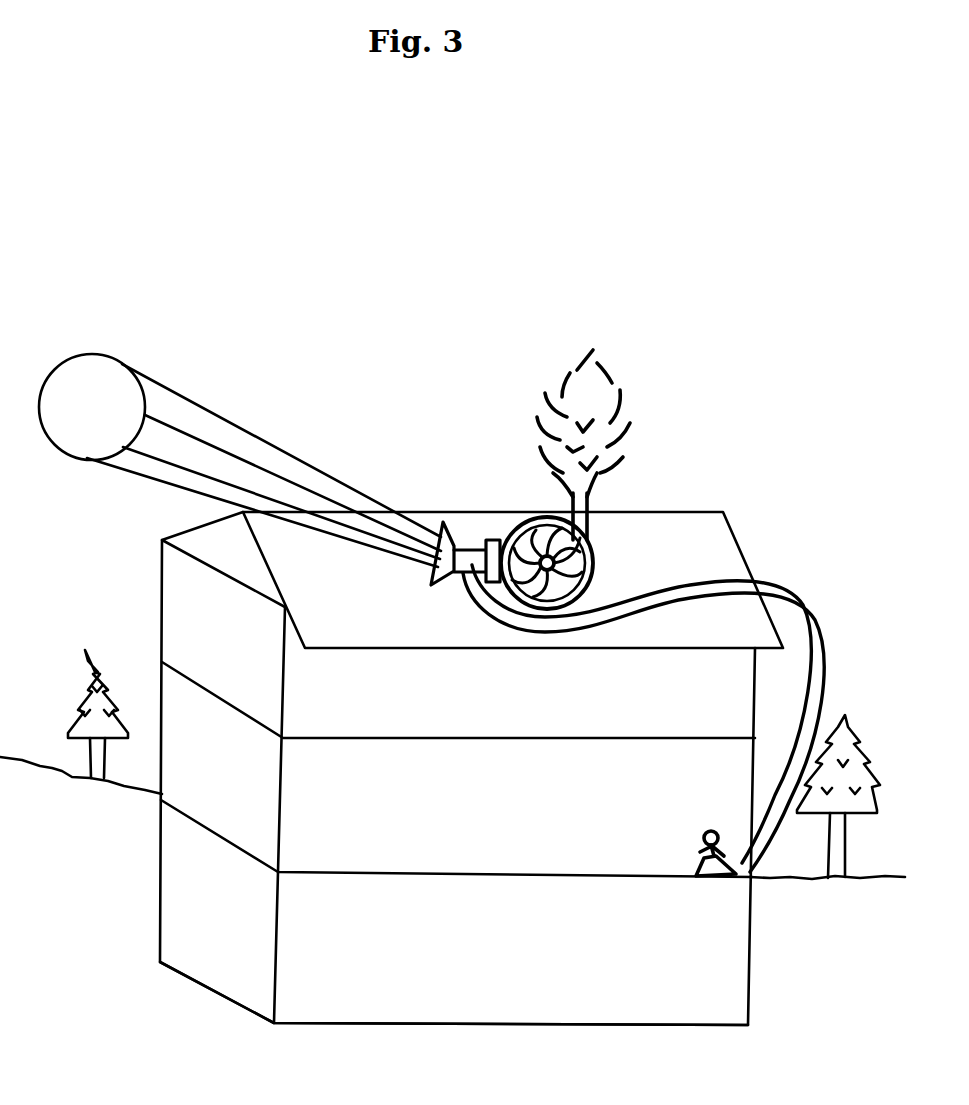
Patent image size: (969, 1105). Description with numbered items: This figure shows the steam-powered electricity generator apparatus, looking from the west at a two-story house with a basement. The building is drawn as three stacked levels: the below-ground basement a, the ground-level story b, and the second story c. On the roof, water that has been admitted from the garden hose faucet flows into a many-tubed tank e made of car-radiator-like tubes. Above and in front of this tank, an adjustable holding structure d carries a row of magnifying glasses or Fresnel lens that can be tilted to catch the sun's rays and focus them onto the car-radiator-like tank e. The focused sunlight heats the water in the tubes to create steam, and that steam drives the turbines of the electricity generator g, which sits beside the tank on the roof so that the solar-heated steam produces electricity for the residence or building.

The below-ground basement level a is at (454, 955).
The ground-level building level b is at (456, 806).
The second story level c is at (458, 674).
The adjustable holding structure for magnifying glasses or Fresnel lens d is at (428, 507).
The many-tubed car-radiator-like tank e is at (479, 547).
The electricity generator g is at (606, 504).